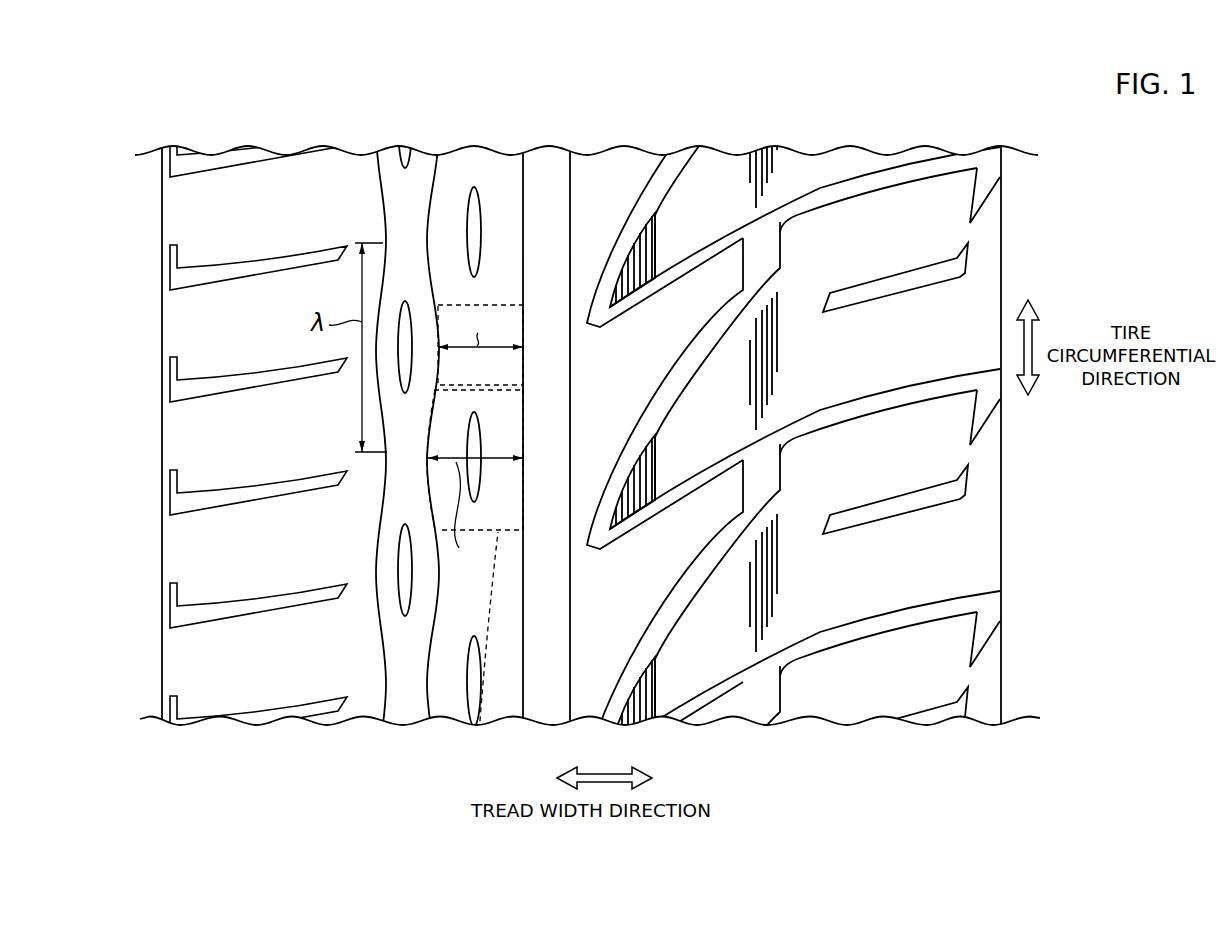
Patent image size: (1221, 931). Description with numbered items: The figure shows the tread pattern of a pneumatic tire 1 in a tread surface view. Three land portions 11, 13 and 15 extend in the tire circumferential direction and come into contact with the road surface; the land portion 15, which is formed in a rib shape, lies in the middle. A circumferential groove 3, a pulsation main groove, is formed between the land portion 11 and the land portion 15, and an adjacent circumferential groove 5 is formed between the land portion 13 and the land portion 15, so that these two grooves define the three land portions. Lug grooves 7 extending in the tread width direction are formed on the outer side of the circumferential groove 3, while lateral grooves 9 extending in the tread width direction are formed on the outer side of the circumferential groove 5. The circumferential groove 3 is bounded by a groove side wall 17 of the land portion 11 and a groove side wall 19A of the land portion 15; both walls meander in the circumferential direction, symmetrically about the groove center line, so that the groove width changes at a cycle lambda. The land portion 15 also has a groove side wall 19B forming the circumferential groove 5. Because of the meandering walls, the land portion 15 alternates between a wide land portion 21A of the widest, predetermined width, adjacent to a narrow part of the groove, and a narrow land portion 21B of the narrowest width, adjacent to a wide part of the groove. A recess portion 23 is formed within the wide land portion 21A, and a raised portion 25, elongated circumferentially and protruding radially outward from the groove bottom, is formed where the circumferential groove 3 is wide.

The pneumatic tire 1 is at (1000, 101).
The circumferential groove 3 is at (389, 172).
The circumferential groove 5 is at (547, 190).
The lug grooves 7 is at (287, 262).
The lateral grooves 9 is at (898, 172).
The land portion 11 is at (337, 190).
The land portion 13 is at (610, 173).
The land portion 15 is at (500, 202).
The groove side wall 17 is at (393, 694).
The groove side wall 19A is at (426, 693).
The groove side wall 19B is at (526, 690).
The wide land portion 21A is at (474, 654).
The narrow land portion 21B is at (493, 303).
The recess portion 23 is at (467, 234).
The raised portion 25 is at (404, 574).